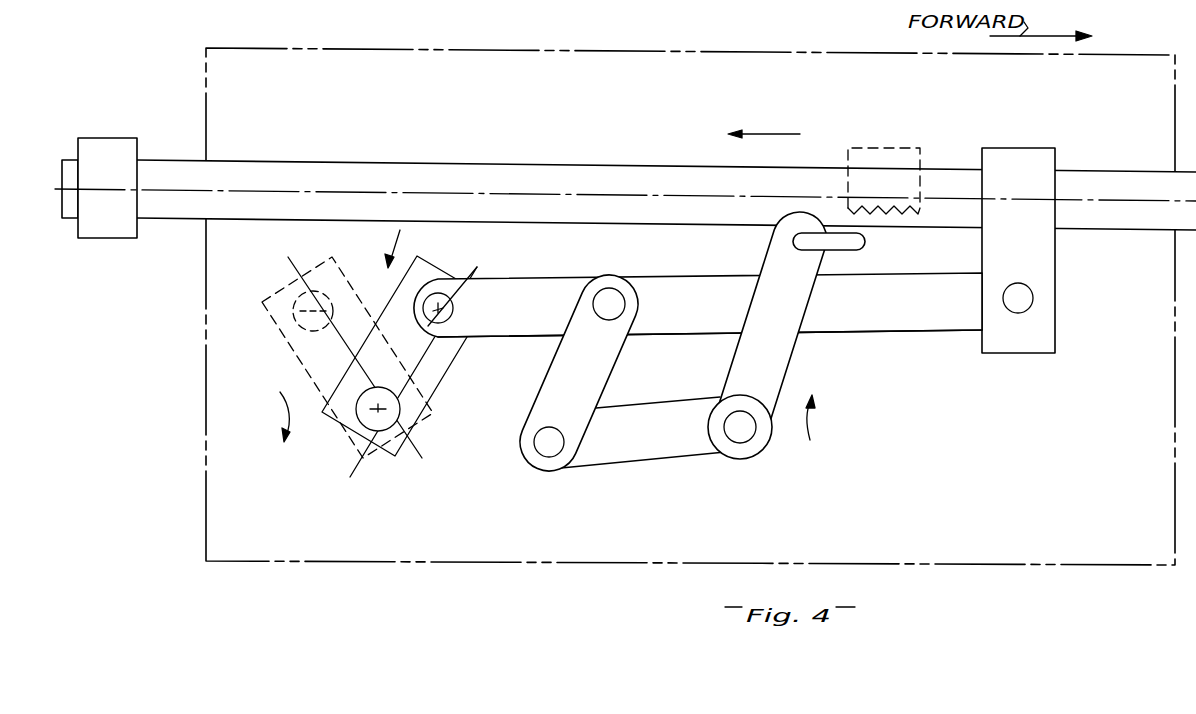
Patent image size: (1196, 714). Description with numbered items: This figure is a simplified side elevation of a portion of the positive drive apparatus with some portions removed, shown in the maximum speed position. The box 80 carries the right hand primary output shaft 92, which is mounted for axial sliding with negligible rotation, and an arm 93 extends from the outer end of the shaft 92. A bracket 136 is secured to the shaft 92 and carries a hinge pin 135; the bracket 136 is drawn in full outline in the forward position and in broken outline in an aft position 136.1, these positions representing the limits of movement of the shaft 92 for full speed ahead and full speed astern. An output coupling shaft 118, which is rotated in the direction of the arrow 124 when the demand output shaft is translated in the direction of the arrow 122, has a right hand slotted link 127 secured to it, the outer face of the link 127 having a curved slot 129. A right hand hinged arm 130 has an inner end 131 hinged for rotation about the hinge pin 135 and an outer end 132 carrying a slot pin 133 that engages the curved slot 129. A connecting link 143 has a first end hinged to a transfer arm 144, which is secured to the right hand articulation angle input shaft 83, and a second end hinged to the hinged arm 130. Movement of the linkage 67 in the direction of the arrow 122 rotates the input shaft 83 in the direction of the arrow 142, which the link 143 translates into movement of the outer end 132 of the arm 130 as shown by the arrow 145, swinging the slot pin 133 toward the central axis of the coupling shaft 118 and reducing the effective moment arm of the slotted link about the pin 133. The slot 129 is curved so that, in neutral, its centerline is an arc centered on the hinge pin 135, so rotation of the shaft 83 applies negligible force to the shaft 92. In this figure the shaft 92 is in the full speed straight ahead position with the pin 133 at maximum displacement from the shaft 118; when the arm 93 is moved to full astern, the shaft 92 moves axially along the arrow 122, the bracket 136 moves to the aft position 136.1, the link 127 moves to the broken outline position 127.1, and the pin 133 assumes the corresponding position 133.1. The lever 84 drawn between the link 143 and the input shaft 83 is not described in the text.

The box 80 is at (704, 30).
The right hand primary output shaft 92 is at (352, 146).
The arm 93 is at (100, 230).
The bracket 136 is at (1040, 253).
The hinge pin 135 is at (1028, 307).
The aft position of bracket 136.1 is at (877, 148).
The arrow 122 is at (762, 134).
The right hand slotted link 127 is at (430, 377).
The curved slot 129 is at (420, 352).
The broken outline position of link 127.1 is at (277, 265).
The corresponding position of pin 133.1 is at (268, 318).
The output coupling shaft 118 is at (400, 402).
The arrow 145 is at (394, 236).
The arrow 124 is at (278, 398).
The transfer arm 144 is at (660, 452).
The right hand hinged arm 130 is at (698, 307).
The outer end 132 is at (566, 266).
The inner end 131 is at (906, 322).
The slot pin 133 is at (441, 296).
The connecting link 143 is at (593, 380).
The lever arm 84 is at (780, 366).
The right hand articulation angle input shaft 83 is at (750, 434).
The linkage 67 is at (872, 244).
The arrow 142 is at (820, 438).